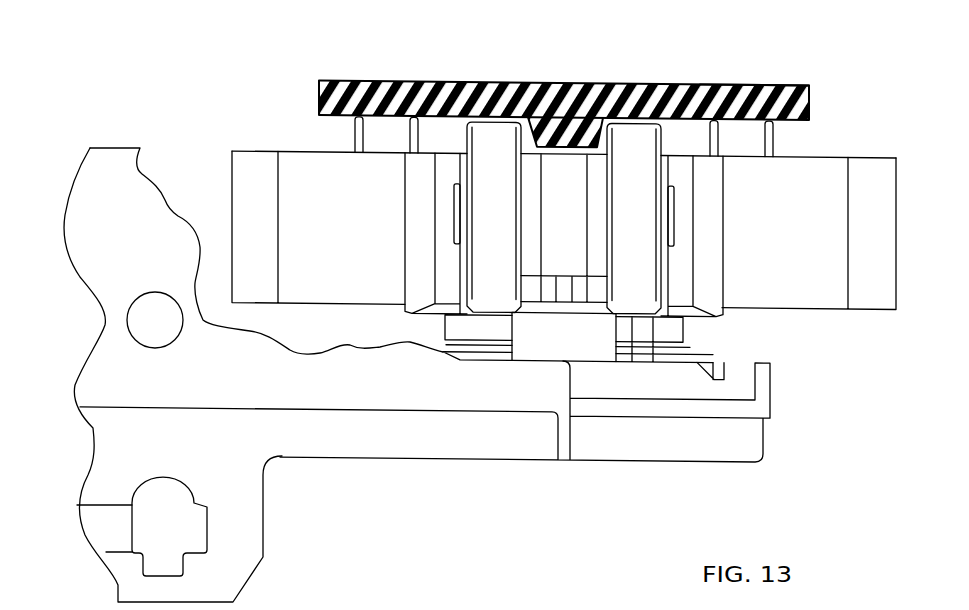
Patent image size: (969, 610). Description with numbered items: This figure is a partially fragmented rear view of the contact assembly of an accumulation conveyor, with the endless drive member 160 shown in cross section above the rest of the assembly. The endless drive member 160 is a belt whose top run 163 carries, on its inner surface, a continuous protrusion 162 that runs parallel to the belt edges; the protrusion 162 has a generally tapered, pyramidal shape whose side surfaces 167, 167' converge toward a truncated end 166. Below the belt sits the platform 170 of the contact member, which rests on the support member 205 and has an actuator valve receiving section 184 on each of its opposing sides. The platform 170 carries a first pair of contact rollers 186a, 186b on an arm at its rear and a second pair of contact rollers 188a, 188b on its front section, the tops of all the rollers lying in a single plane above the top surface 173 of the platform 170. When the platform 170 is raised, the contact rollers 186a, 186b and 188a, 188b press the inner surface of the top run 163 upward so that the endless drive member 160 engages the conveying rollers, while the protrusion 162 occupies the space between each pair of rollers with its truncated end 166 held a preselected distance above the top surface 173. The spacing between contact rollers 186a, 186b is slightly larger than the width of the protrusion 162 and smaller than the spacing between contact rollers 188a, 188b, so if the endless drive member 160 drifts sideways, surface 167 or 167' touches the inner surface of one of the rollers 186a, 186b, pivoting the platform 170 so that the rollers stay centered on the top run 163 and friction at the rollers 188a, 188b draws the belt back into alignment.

The support member 205 is at (72, 140).
The endless drive member 160 is at (368, 80).
The top run 163 is at (752, 82).
The protrusion 162 is at (544, 120).
The truncated end 166 is at (572, 158).
The surface 167 is at (485, 177).
The surface 167' is at (644, 177).
The actuator valve receiving section 184 is at (360, 247).
The contact roller 188a is at (350, 135).
The contact roller 188b is at (758, 143).
The top surface 173 is at (567, 157).
The contact roller 186a is at (492, 300).
The contact roller 186b is at (640, 296).
The platform 170 is at (877, 352).